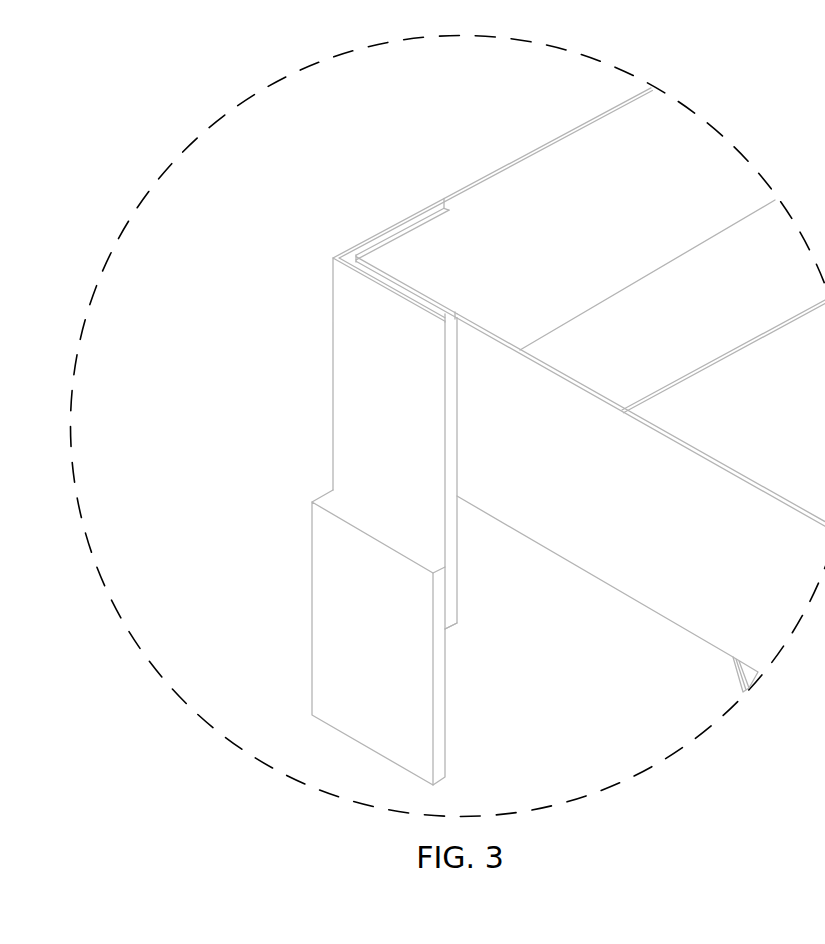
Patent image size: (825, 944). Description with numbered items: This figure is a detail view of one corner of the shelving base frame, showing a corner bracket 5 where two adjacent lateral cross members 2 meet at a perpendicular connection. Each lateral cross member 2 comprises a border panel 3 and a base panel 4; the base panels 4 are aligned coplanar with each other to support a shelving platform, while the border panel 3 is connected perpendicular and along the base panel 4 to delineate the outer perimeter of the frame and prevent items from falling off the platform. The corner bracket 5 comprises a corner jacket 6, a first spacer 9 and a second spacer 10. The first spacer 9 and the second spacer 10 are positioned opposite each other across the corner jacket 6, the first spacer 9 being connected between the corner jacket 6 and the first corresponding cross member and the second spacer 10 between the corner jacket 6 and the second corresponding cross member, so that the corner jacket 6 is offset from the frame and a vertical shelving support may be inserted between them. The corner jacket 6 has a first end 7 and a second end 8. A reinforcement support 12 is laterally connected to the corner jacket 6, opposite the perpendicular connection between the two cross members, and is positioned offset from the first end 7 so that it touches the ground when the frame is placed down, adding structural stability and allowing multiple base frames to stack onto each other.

The lateral cross member 2 is at (568, 130).
The border panel 3 is at (612, 112).
The base panel 4 is at (728, 348).
The corner bracket 5 is at (292, 407).
The corner jacket 6 is at (337, 335).
The first end 7 is at (376, 237).
The second end 8 is at (448, 626).
The first spacer 9 is at (457, 445).
The second spacer 10 is at (450, 200).
The reinforcement support 12 is at (314, 618).